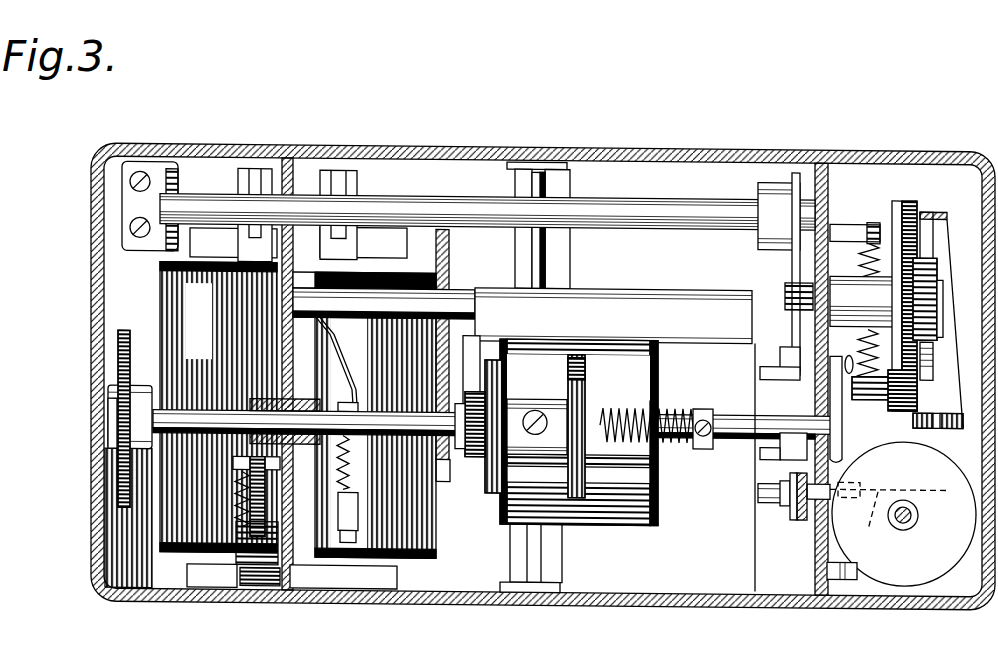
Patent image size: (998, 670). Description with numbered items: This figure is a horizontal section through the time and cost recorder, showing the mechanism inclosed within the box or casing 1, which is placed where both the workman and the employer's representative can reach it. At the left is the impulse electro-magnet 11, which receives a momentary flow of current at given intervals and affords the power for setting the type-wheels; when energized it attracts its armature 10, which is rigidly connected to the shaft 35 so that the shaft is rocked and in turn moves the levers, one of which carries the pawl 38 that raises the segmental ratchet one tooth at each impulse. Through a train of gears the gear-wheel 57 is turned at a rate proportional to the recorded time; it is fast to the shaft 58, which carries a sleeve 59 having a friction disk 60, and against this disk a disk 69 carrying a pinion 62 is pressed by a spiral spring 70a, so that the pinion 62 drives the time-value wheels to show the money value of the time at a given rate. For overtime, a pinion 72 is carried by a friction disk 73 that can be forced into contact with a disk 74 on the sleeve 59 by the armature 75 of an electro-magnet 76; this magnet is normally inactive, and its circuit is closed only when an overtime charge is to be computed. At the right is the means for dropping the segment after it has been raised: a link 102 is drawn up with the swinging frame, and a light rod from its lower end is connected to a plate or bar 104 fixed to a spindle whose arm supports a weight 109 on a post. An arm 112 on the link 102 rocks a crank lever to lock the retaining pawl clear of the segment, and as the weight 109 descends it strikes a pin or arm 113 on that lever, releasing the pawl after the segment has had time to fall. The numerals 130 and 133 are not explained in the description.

The casing 1 is at (233, 141).
The armature 10 is at (218, 244).
The impulse electro-magnet 11 is at (218, 407).
The shaft 35 is at (665, 202).
The pawl 38 is at (793, 442).
The gear-wheel 57 is at (123, 330).
The shaft 58 is at (311, 433).
The sleeve 59 is at (559, 417).
The friction disk 60 is at (565, 363).
The pinion 62 is at (594, 448).
The disk 69 is at (590, 367).
The spiral spring 70a is at (676, 402).
The pinion 72 is at (474, 455).
The friction disk 73 is at (495, 492).
The disk 74 is at (470, 495).
The armature 75 is at (470, 378).
The electro-magnet 76 is at (602, 508).
The link 102 is at (800, 511).
The plate or bar 104 is at (770, 393).
The weight 109 is at (898, 575).
The arm 112 is at (790, 501).
The pin or arm 113 is at (889, 518).
The plate 130 is at (948, 220).
The block 133 is at (944, 322).